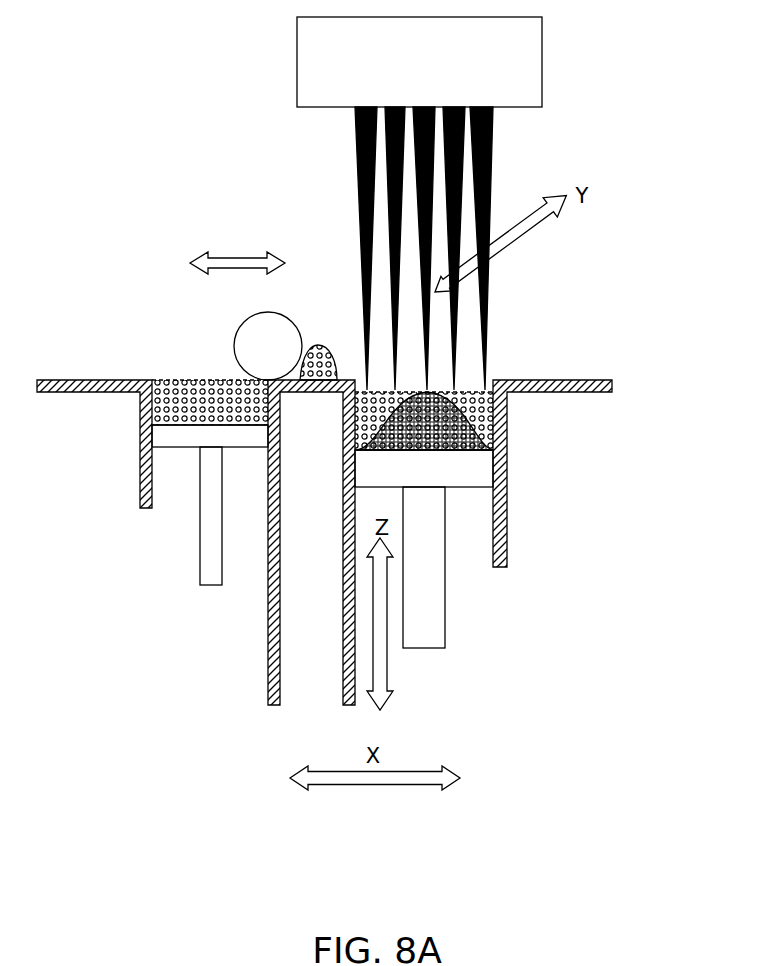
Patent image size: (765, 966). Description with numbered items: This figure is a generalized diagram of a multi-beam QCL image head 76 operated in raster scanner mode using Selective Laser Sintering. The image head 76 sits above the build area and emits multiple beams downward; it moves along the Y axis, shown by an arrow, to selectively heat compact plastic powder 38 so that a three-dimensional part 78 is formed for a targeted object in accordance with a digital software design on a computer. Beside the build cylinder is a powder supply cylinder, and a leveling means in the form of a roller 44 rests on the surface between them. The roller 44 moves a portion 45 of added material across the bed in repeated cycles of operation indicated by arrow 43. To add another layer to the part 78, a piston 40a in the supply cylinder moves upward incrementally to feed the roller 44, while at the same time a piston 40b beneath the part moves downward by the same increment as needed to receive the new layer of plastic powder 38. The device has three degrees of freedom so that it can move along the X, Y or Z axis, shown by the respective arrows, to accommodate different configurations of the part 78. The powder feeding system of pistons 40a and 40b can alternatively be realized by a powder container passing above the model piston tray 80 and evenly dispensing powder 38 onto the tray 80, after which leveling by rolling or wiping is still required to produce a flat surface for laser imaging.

The multi-beam QCL image head 76 is at (410, 70).
The arrow 43 is at (238, 257).
The model piston tray 80 is at (172, 358).
The roller 44 is at (238, 328).
The portion of added material 45 is at (323, 343).
The 3D part 78 is at (437, 390).
The compact plastic powder 38 is at (488, 390).
The piston 40a is at (200, 550).
The piston 40b is at (445, 608).